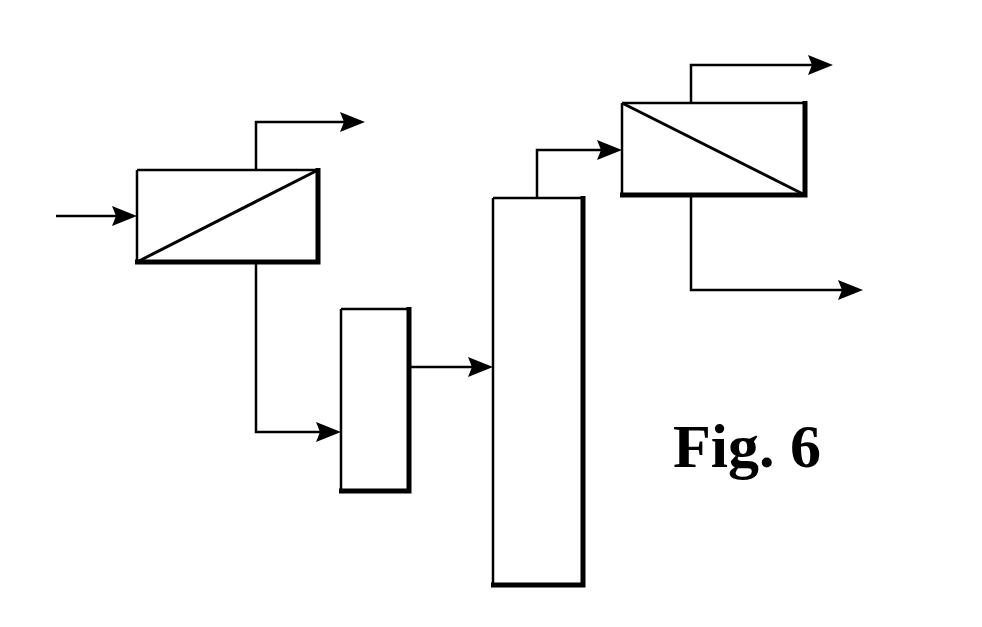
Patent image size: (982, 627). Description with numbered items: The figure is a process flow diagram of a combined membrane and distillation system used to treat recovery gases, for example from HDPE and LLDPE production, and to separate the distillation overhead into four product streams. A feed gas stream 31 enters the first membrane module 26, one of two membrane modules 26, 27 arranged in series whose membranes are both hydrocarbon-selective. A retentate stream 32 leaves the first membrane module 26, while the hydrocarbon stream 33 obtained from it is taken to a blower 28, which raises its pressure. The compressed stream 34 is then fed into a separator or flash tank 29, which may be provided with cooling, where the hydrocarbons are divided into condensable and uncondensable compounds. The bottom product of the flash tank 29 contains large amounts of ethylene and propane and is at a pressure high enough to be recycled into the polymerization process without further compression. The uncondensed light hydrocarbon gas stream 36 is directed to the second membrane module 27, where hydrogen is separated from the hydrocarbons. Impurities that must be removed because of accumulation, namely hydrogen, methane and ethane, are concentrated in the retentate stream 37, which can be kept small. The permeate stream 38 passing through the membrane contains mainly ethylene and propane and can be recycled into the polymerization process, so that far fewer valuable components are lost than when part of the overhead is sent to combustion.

The first membrane module 26 is at (318, 205).
The second membrane module 27 is at (805, 137).
The blower 28 is at (355, 407).
The separator (flash tank) 29 is at (515, 302).
The feed gas stream 31 is at (96, 202).
The first membrane module retentate stream 32 is at (310, 127).
The hydrocarbon permeate stream 33 is at (298, 352).
The compressed hydrocarbon stream 34 is at (451, 354).
The flash tank gas product stream 36 is at (579, 155).
The second membrane module retentate stream 37 is at (762, 65).
The second membrane module permeate stream 38 is at (777, 247).